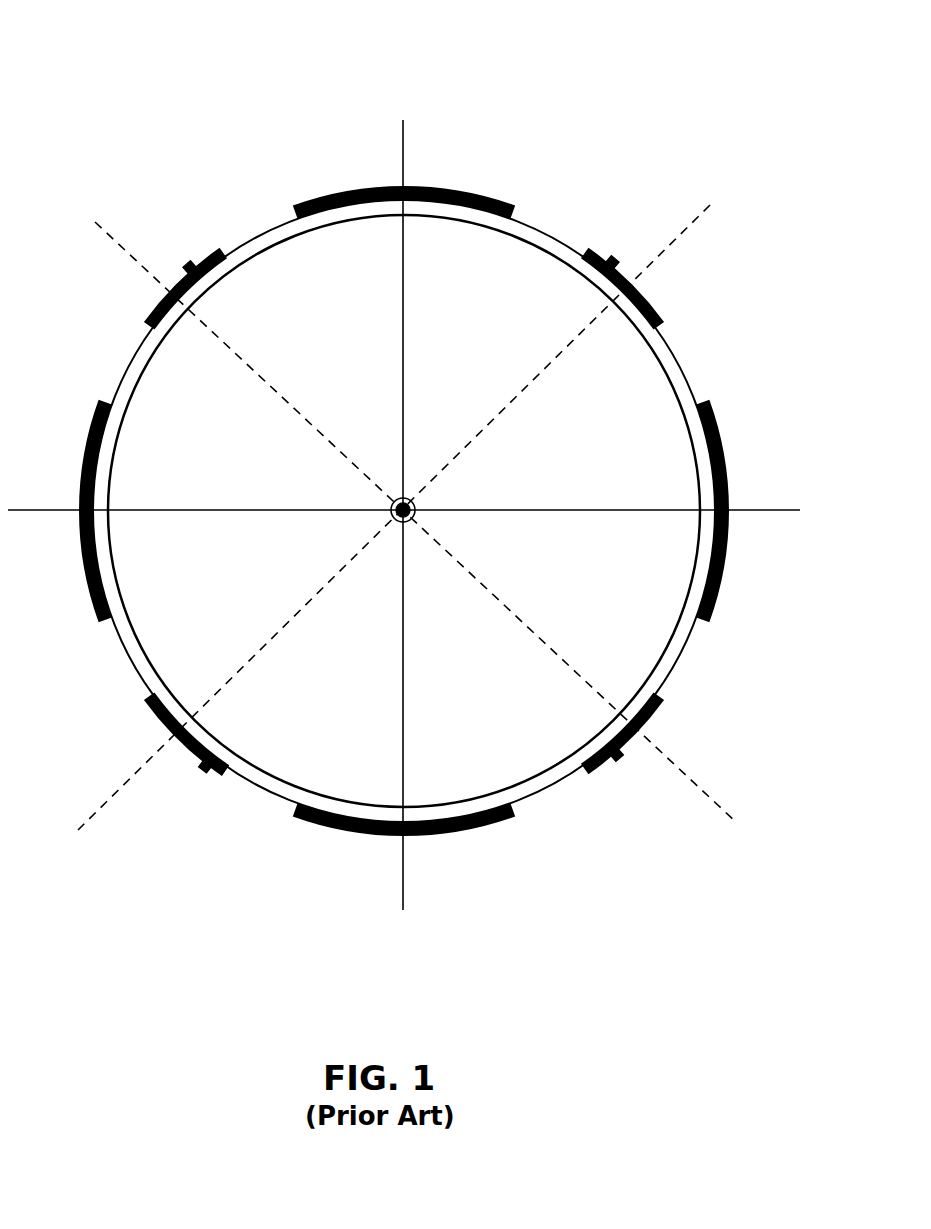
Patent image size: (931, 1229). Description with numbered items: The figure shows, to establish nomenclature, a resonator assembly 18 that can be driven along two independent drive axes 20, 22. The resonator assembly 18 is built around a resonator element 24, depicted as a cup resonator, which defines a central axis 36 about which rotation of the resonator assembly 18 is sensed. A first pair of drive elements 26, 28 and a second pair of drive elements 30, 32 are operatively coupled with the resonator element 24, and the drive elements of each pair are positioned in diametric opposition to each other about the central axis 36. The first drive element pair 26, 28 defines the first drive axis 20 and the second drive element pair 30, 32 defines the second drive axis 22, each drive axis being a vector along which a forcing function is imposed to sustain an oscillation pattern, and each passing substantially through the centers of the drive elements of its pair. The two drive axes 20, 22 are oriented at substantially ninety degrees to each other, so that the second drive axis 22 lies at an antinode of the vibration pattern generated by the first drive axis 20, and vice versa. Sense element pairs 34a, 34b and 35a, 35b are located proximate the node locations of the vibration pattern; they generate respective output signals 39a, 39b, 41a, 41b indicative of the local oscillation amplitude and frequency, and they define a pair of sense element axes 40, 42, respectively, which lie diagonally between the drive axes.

The resonator assembly 18 is at (141, 63).
The first drive axis 20 is at (760, 514).
The second drive axis 22 is at (400, 150).
The resonator element 24 is at (572, 248).
The first drive element 26 is at (712, 418).
The first drive element 28 is at (85, 476).
The second drive element 30 is at (475, 192).
The second drive element 32 is at (440, 846).
The sense element 34a is at (657, 307).
The sense element 34b is at (160, 722).
The sense element 35a is at (153, 305).
The sense element 35b is at (665, 707).
The central axis 36 is at (417, 505).
The output signal 39a is at (612, 262).
The output signal 39b is at (205, 768).
The sense element axis 40 is at (303, 624).
The output signal 41a is at (190, 266).
The output signal 41b is at (617, 757).
The sense element axis 42 is at (485, 593).